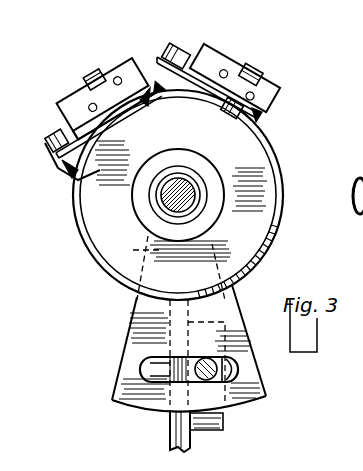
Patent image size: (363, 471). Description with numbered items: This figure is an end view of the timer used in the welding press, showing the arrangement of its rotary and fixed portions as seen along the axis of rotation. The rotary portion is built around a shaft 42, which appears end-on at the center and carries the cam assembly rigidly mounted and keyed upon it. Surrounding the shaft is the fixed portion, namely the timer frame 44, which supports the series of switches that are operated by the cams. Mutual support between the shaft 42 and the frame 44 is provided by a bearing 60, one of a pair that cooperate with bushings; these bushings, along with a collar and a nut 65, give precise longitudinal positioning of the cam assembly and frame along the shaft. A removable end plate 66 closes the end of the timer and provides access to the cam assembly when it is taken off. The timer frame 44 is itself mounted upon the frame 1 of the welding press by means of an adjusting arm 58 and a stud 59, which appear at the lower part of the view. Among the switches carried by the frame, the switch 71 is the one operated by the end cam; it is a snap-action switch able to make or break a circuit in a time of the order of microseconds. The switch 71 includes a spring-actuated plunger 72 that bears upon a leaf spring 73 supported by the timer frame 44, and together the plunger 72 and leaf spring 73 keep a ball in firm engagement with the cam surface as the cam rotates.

The frame 1 is at (224, 428).
The shaft 42 is at (190, 197).
The frame 44 is at (79, 246).
The adjusting arm 58 is at (128, 328).
The stud 59 is at (262, 368).
The bearing 60 is at (192, 152).
The nut 65 is at (346, 222).
The removable end plate 66 is at (253, 160).
The switch 71 is at (270, 90).
The plunger 72 is at (250, 109).
The leaf spring 73 is at (205, 75).